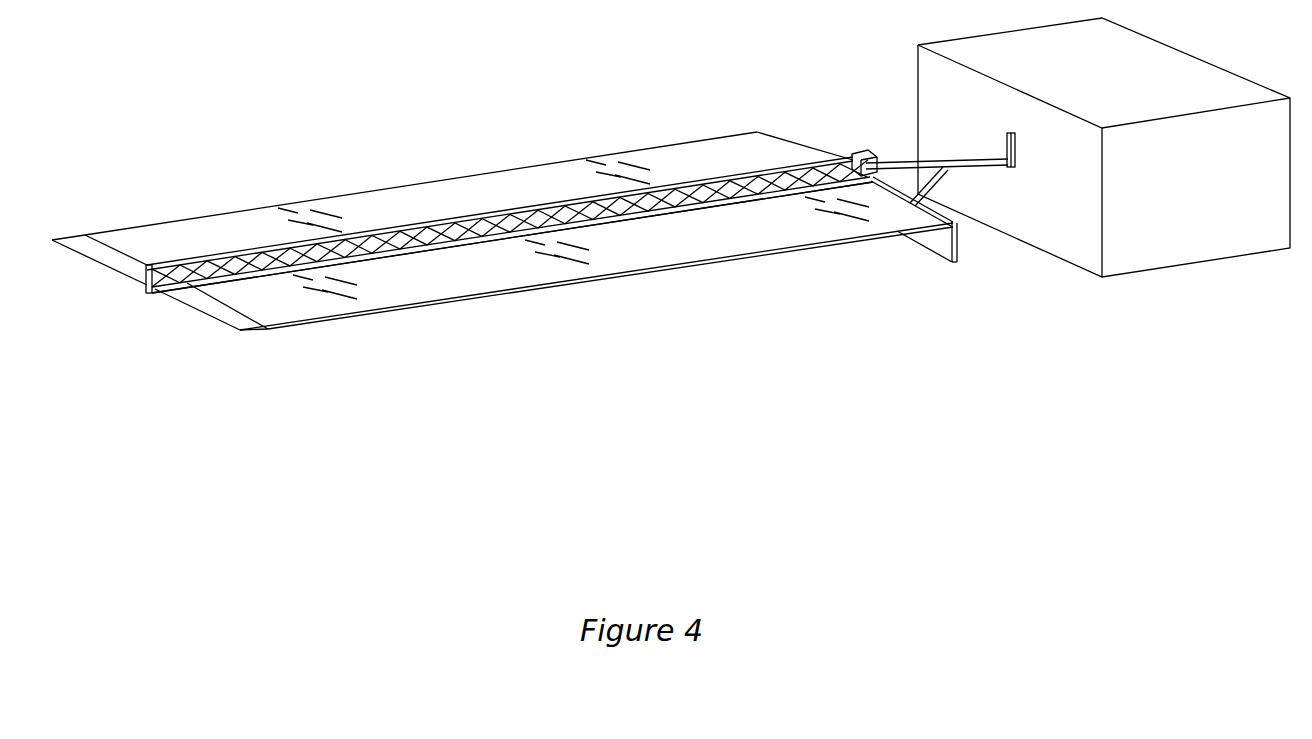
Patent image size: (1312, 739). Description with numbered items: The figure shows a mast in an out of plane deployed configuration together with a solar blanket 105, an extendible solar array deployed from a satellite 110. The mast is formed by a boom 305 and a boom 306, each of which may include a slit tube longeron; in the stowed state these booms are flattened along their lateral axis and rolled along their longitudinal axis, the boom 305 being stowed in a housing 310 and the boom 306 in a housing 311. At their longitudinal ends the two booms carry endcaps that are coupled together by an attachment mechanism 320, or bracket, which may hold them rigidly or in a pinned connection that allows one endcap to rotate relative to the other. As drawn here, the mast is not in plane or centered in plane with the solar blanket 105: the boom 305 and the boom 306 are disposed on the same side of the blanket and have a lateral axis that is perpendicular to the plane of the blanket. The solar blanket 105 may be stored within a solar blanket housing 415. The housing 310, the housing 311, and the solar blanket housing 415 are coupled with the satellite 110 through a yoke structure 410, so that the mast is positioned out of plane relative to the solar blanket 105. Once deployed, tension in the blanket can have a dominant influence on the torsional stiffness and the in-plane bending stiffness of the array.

The solar blanket 105 is at (512, 262).
The satellite 110 is at (1178, 203).
The boom 305 is at (410, 252).
The boom 306 is at (387, 232).
The housing 310 is at (877, 183).
The housing 311 is at (857, 155).
The attachment mechanism 320 is at (155, 293).
The yoke structure 410 is at (932, 238).
The solar blanket housing 415 is at (945, 177).